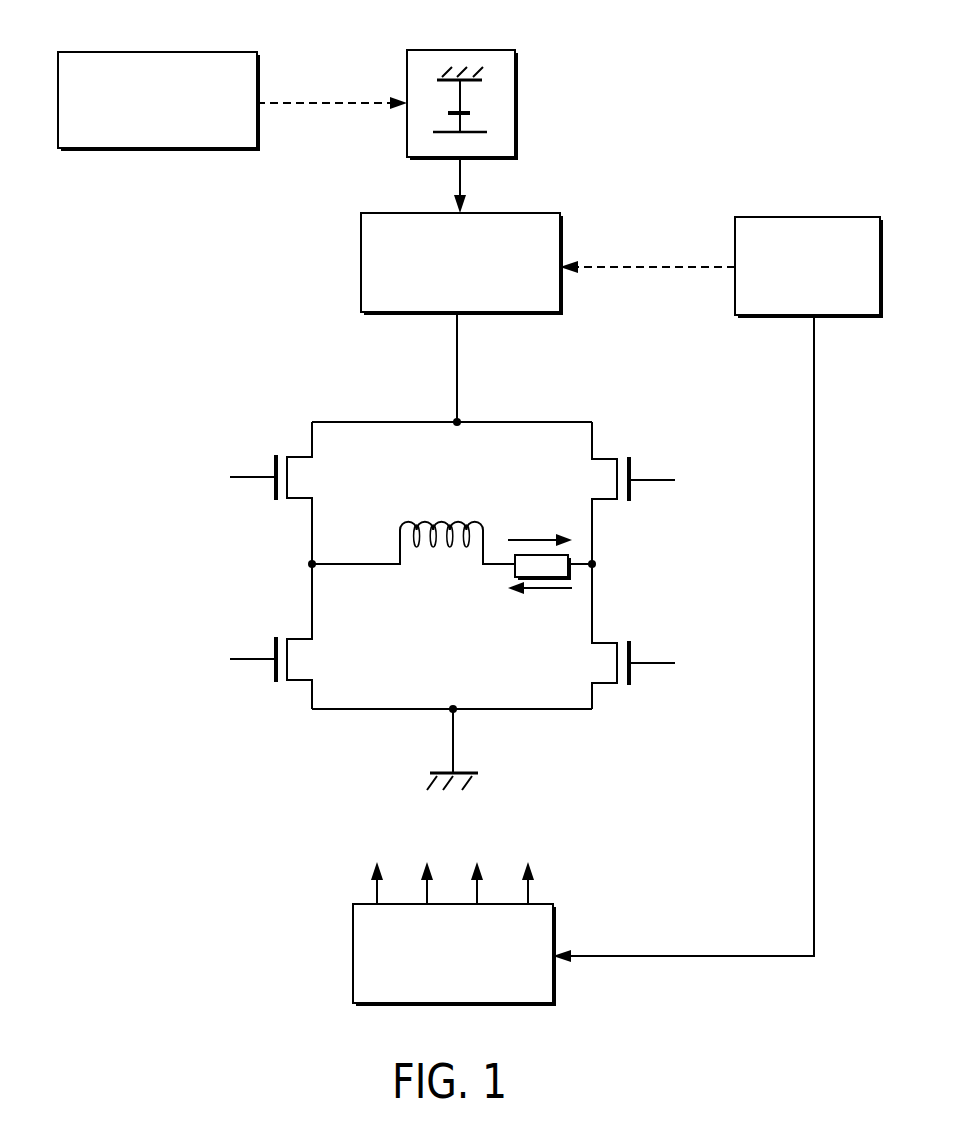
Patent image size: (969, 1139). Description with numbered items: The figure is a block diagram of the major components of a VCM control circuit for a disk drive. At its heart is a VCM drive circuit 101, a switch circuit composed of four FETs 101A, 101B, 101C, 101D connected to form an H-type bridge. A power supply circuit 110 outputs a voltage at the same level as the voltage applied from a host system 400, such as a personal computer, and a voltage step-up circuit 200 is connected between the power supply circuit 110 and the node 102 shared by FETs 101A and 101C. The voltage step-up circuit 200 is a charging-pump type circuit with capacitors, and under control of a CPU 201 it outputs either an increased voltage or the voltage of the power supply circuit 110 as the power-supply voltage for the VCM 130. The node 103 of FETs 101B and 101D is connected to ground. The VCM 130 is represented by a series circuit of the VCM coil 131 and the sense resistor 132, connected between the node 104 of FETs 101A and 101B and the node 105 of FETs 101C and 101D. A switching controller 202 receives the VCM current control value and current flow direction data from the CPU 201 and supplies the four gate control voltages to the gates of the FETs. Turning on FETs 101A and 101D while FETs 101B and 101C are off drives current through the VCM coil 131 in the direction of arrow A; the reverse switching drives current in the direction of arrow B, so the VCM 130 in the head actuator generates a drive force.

The host system 400 is at (214, 62).
The power supply circuit 110 is at (497, 63).
The voltage step-up circuit 200 is at (540, 216).
The CPU 201 is at (850, 225).
The switching controller 202 is at (542, 916).
The VCM drive circuit 101 is at (419, 575).
The FET 101A is at (275, 460).
The FET 101B is at (275, 648).
The FET 101C is at (628, 463).
The FET 101D is at (628, 646).
The node 102 is at (455, 420).
The node 103 is at (450, 712).
The node 104 is at (308, 562).
The node 105 is at (596, 563).
The VCM 130 is at (452, 556).
The VCM coil 131 is at (445, 523).
The sense resistor 132 is at (518, 574).